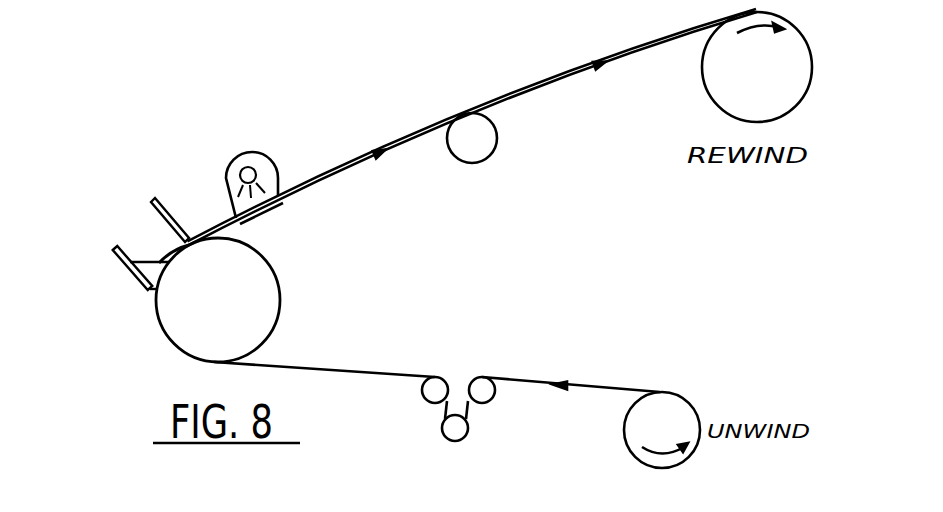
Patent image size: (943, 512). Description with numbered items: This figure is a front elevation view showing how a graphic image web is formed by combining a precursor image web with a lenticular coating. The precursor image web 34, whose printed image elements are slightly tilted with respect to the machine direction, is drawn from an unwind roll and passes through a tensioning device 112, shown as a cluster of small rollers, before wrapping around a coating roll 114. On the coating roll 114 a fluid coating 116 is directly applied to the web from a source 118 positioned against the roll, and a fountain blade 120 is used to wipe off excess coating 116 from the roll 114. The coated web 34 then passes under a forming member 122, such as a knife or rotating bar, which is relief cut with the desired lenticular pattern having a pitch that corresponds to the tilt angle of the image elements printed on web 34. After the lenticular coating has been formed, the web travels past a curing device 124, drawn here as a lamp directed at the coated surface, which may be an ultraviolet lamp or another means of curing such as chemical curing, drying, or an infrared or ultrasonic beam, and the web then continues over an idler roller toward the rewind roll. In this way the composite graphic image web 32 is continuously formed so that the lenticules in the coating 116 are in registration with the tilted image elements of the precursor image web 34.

The composite graphic image web 32 is at (537, 86).
The precursor image web 34 is at (593, 385).
The tensioning device 112 is at (458, 430).
The coating roll 114 is at (273, 271).
The fluid coating 116 is at (163, 241).
The source 118 is at (153, 270).
The fountain blade 120 is at (117, 252).
The forming member 122 is at (155, 199).
The drying / curing lamp 124 is at (250, 153).